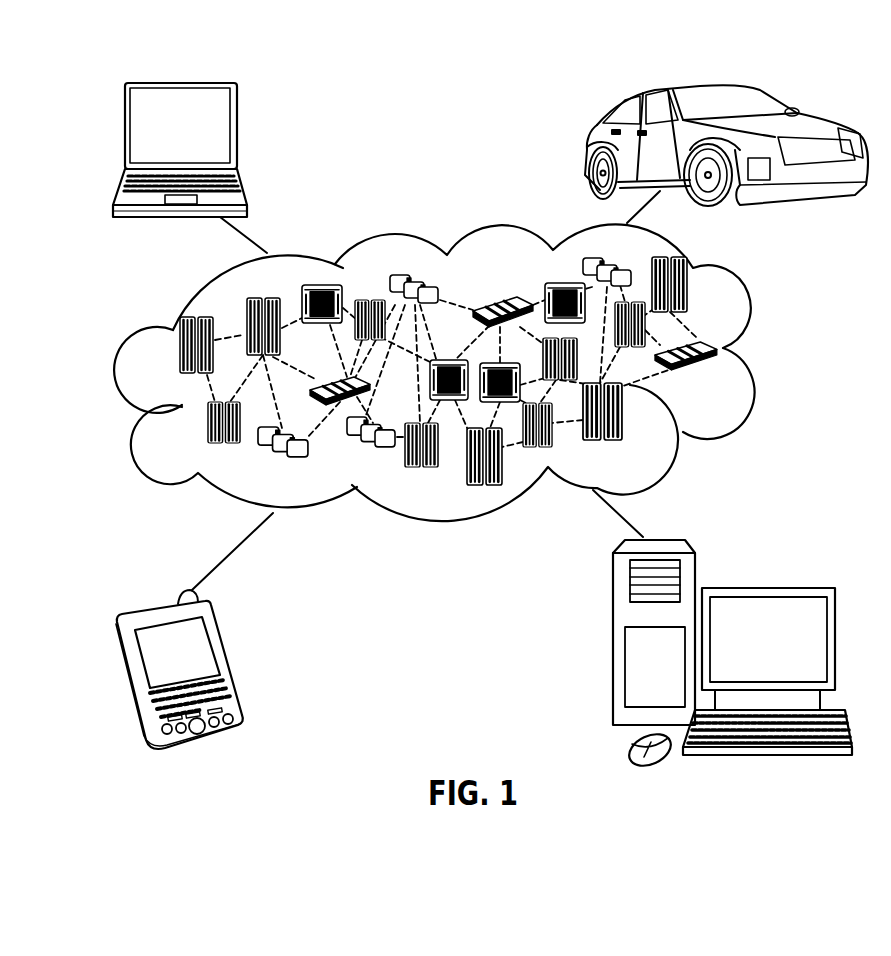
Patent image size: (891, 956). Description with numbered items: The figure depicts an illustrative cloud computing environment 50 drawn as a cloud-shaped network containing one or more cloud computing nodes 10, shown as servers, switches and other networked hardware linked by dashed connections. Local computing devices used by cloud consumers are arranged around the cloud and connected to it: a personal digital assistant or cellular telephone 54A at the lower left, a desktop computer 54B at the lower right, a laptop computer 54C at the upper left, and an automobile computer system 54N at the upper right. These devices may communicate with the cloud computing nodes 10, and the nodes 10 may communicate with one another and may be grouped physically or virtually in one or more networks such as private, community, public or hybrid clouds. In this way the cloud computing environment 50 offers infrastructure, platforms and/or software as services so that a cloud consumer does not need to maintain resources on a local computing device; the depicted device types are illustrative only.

The cloud computing nodes 10 is at (490, 427).
The cloud computing environment 50 is at (767, 353).
The personal digital assistant (PDA) or cellular telephone 54A is at (228, 663).
The desktop computer 54B is at (765, 588).
The laptop computer 54C is at (237, 134).
The automobile computer system 54N is at (592, 150).